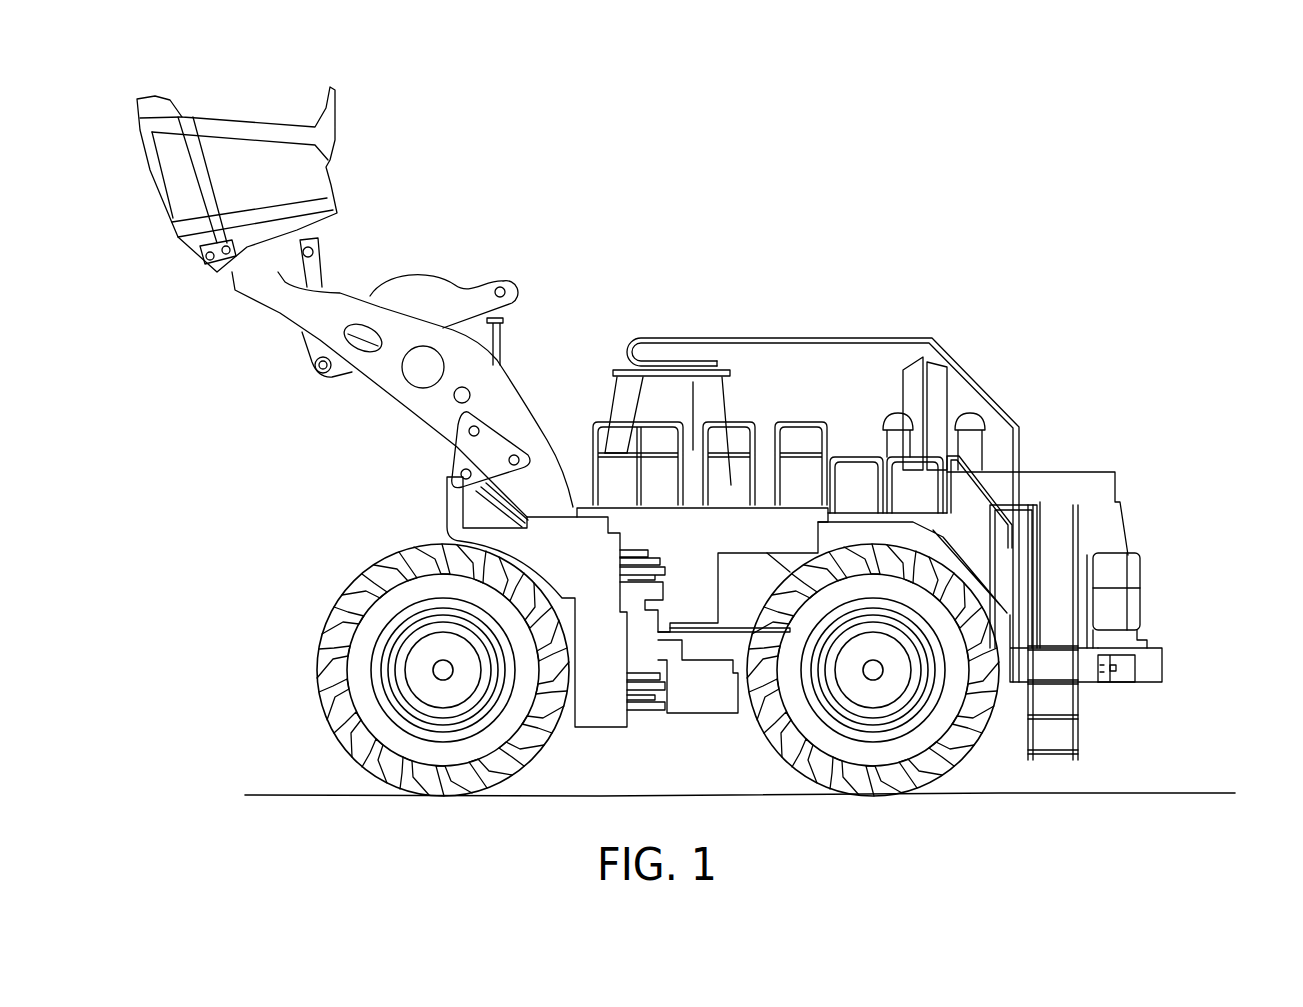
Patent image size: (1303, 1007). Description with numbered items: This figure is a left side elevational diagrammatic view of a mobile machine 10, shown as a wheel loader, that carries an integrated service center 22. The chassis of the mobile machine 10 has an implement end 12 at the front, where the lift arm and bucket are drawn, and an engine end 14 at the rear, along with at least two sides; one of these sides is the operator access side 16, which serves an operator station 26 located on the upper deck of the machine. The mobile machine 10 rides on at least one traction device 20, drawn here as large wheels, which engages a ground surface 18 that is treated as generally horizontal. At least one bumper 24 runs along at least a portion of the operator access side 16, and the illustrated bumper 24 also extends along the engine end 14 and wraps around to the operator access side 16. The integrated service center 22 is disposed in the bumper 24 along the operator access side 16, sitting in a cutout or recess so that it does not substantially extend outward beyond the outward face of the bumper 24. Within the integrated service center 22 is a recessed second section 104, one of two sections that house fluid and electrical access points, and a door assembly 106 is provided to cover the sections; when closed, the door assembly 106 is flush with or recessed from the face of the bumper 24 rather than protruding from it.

The mobile machine 10 is at (895, 253).
The implement end 12 is at (373, 439).
The engine end 14 is at (1136, 533).
The operator access side 16 is at (785, 527).
The ground surface 18 is at (1077, 795).
The traction device 20 is at (355, 675).
The integrated service center 22 is at (1133, 665).
The bumper 24 is at (1147, 677).
The operator station 26 is at (675, 365).
The second section 104 is at (1107, 677).
The door assembly 106 is at (1122, 677).